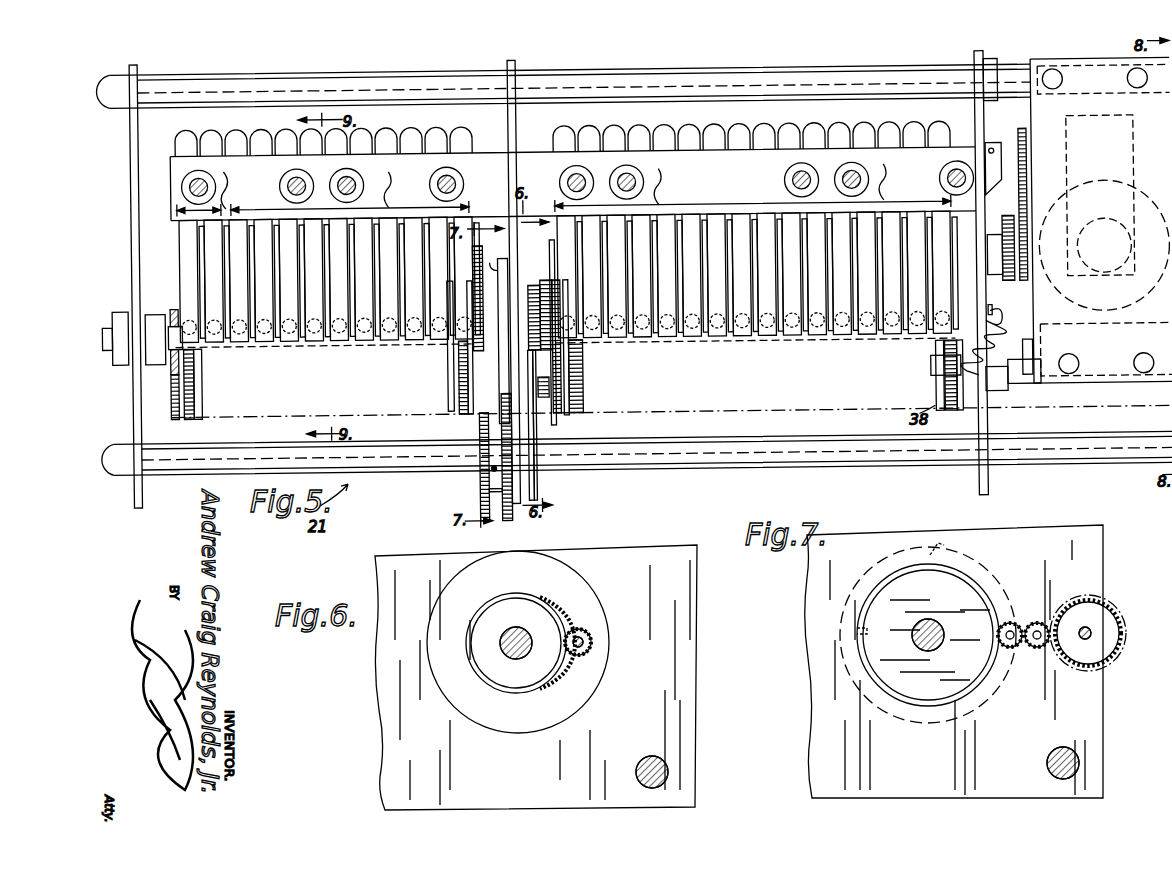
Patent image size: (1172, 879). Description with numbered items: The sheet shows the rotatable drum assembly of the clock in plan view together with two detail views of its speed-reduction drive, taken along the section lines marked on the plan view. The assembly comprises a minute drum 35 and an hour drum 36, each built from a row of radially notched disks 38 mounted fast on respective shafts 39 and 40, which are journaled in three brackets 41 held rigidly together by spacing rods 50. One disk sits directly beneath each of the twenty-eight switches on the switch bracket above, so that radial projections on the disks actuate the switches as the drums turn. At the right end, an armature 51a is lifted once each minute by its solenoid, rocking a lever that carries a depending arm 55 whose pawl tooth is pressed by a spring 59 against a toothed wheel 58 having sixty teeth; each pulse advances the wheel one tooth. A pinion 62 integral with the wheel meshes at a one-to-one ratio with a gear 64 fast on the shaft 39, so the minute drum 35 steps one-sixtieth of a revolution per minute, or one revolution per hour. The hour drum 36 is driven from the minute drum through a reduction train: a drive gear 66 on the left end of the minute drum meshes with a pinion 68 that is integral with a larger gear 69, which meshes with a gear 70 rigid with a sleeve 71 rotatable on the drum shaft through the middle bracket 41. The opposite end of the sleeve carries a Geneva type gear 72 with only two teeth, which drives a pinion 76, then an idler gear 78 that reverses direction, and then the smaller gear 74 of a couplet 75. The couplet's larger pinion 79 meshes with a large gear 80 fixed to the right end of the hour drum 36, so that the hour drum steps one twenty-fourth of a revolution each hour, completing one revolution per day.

In FIG. 5, the minute drum 35 is at (160, 160).
In FIG. 6, the minute drum 35 is at (459, 722).
In FIG. 7, the minute drum 35 is at (895, 719).
In FIG. 5, the hour drum 36 is at (268, 420).
In FIG. 5, the disk 38 is at (198, 415).
In FIG. 5, the shaft 39 is at (470, 353).
In FIG. 6, the shaft 39 is at (522, 630).
In FIG. 7, the shaft 39 is at (933, 651).
In FIG. 5, the shaft 40 is at (228, 343).
In FIG. 6, the bracket 41 is at (672, 718).
In FIG. 7, the bracket 41 is at (1080, 730).
In FIG. 5, the spacing rod 50 is at (436, 262).
In FIG. 6, the spacing rod 50 is at (636, 778).
In FIG. 7, the spacing rod 50 is at (1045, 762).
In FIG. 5, the armature 51a is at (1101, 212).
In FIG. 5, the depending arm 55 is at (1028, 383).
In FIG. 5, the toothed wheel 58 is at (1020, 143).
In FIG. 5, the spring 59 is at (1005, 341).
In FIG. 5, the pinion 62 is at (1010, 221).
In FIG. 5, the gear 64 is at (1002, 324).
In FIG. 5, the drive gear 66 is at (541, 327).
In FIG. 6, the drive gear 66 is at (560, 594).
In FIG. 5, the pinion 68 is at (538, 397).
In FIG. 6, the pinion 68 is at (590, 652).
In FIG. 5, the gear 69 is at (532, 415).
In FIG. 6, the gear 69 is at (588, 624).
In FIG. 5, the gear 70 is at (530, 284).
In FIG. 6, the gear 70 is at (558, 666).
In FIG. 5, the sleeve 71 is at (506, 304).
In FIG. 6, the sleeve 71 is at (500, 637).
In FIG. 7, the sleeve 71 is at (928, 620).
In FIG. 5, the Geneva type gear 72 is at (486, 295).
In FIG. 7, the Geneva type gear 72 is at (858, 633).
In FIG. 5, the smaller gear 74 is at (535, 510).
In FIG. 7, the smaller gear 74 is at (1066, 658).
In FIG. 5, the couplet 75 is at (488, 472).
In FIG. 7, the couplet 75 is at (1095, 630).
In FIG. 5, the pinion 76 is at (492, 412).
In FIG. 7, the pinion 76 is at (1007, 626).
In FIG. 5, the idler gear 78 is at (500, 442).
In FIG. 7, the idler gear 78 is at (1036, 648).
In FIG. 5, the pinion 79 is at (486, 491).
In FIG. 5, the large gear 80 is at (458, 386).